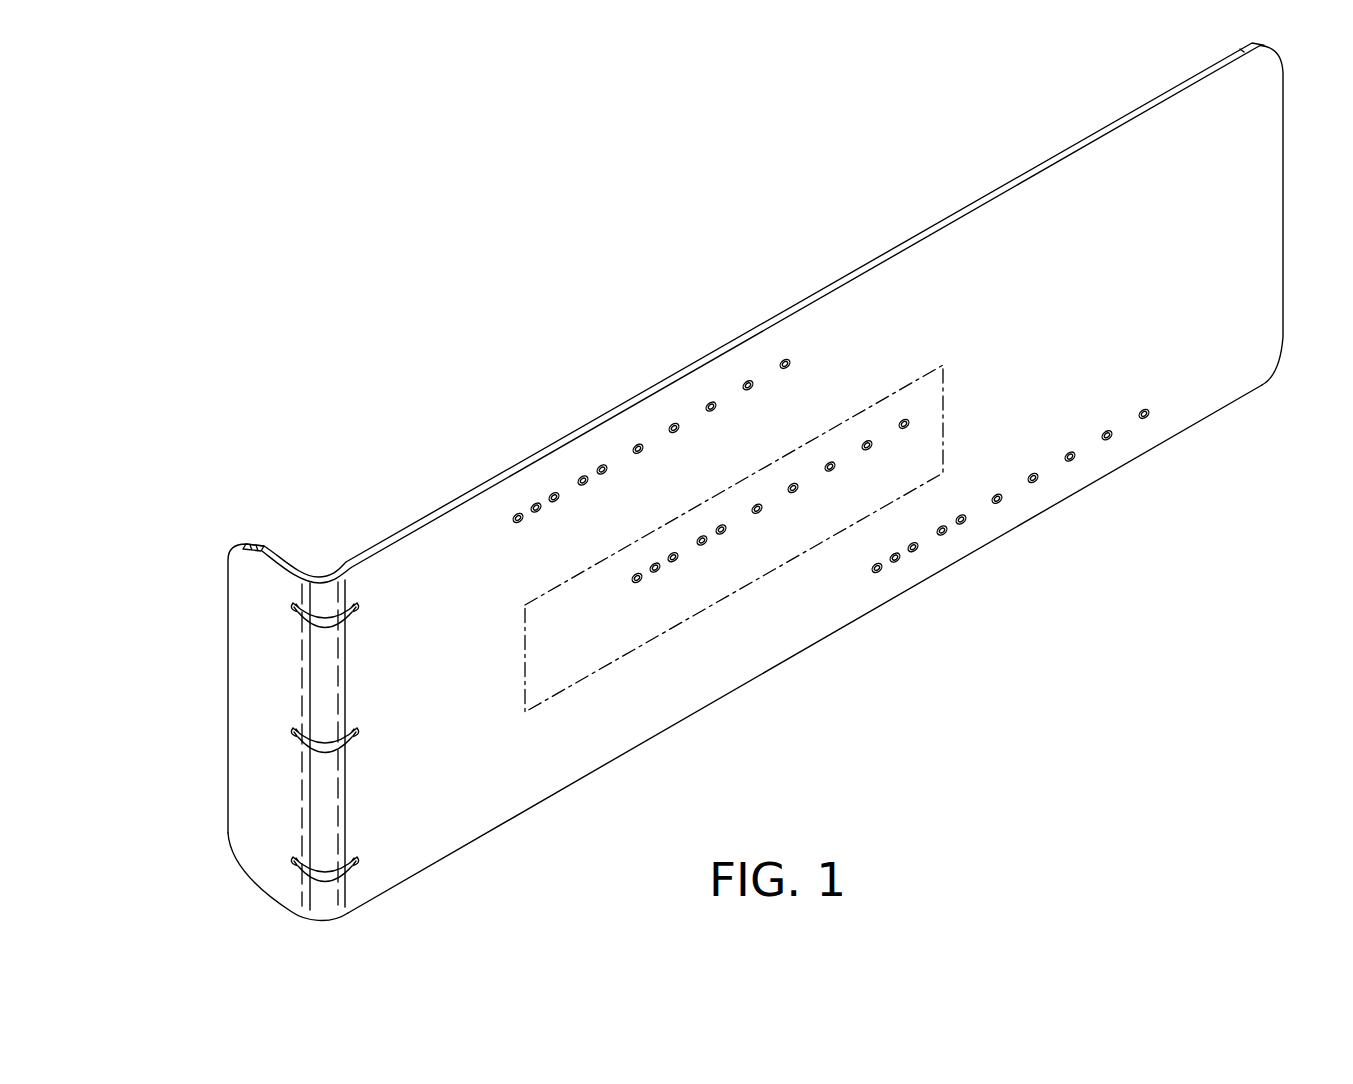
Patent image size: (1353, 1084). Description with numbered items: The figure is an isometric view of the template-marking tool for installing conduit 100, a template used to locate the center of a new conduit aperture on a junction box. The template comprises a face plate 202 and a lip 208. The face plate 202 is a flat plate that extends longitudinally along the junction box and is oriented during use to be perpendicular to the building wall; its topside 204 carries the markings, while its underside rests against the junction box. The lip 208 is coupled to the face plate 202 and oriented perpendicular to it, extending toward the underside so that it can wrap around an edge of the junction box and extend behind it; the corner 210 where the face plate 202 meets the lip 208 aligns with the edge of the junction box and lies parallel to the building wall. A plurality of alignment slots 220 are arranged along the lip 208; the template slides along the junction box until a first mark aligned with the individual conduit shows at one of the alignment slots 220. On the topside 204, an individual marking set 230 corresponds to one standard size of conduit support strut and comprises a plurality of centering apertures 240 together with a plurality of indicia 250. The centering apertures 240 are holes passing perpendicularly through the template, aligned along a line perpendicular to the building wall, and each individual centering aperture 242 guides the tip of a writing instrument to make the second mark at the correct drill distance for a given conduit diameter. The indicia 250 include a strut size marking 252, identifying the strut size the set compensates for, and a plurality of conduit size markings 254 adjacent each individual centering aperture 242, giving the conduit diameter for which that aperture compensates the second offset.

The template-marking tool for installing conduit 100 is at (430, 188).
The face plate 202 is at (951, 250).
The topside 204 is at (497, 807).
The lip 208 is at (258, 570).
The corner 210 is at (325, 908).
The alignment slots 220 is at (293, 738).
The individual marking set 230 is at (853, 413).
The centering apertures 240 is at (913, 547).
The individual centering aperture 242 is at (553, 495).
The indicia 250 is at (602, 628).
The strut size marking 252 is at (463, 522).
The conduit size markings 254 is at (762, 540).